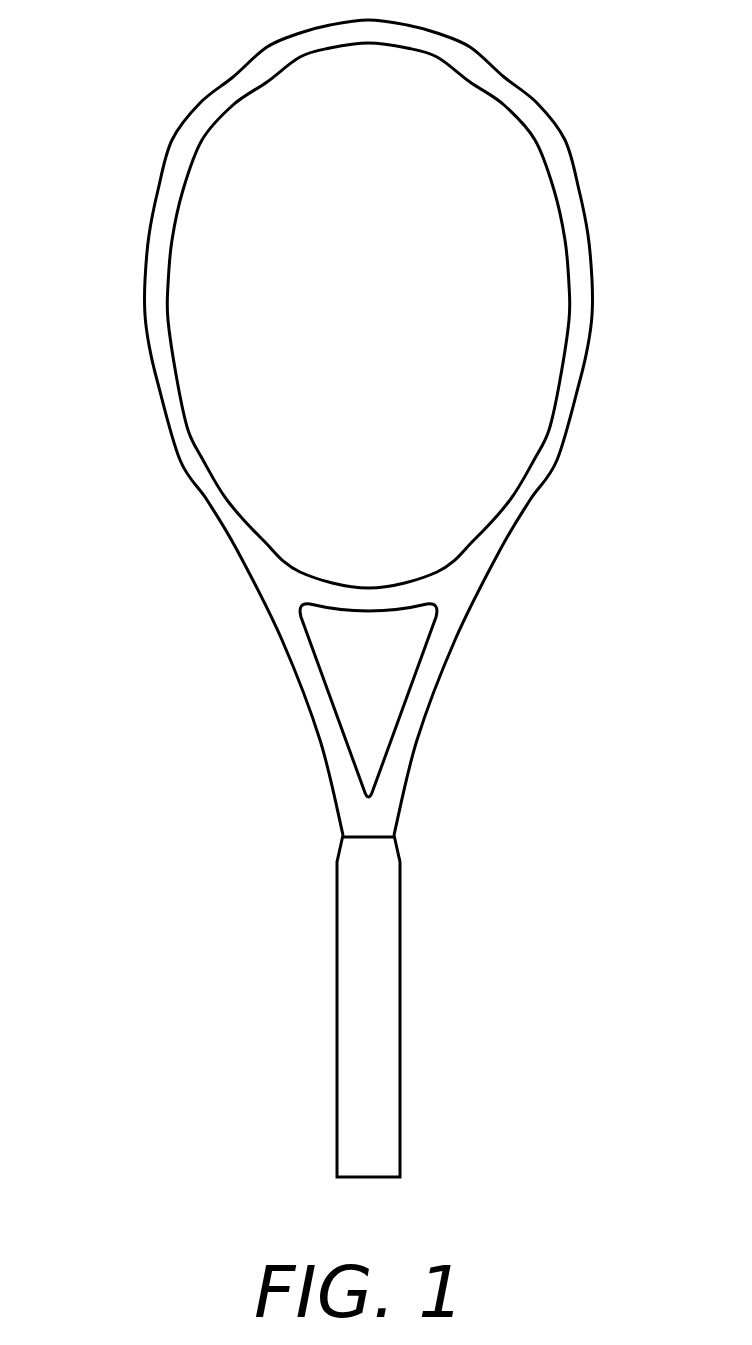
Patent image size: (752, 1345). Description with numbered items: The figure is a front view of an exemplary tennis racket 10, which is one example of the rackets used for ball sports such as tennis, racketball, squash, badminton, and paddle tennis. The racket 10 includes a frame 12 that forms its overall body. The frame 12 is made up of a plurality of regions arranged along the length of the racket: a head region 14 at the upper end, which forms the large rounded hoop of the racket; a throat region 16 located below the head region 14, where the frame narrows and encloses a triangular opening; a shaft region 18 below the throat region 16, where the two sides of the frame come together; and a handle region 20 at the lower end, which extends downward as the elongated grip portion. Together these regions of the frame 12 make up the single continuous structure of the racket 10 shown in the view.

The tennis racket 10 is at (359, 592).
The frame 12 is at (362, 427).
The head region 14 is at (578, 232).
The throat region 16 is at (432, 663).
The shaft region 18 is at (373, 820).
The handle region 20 is at (383, 1008).